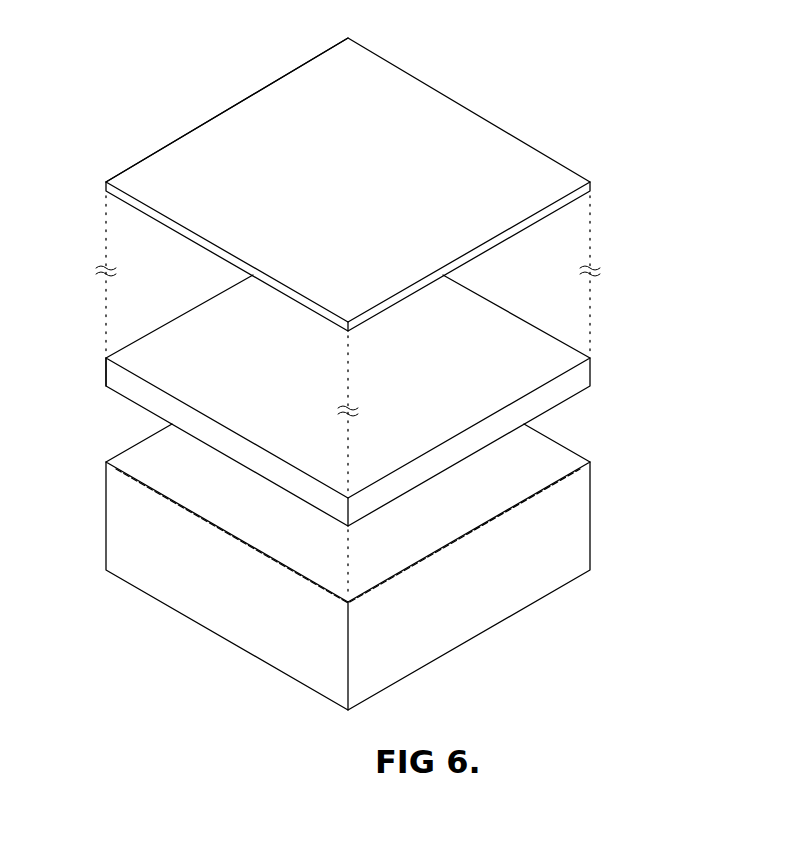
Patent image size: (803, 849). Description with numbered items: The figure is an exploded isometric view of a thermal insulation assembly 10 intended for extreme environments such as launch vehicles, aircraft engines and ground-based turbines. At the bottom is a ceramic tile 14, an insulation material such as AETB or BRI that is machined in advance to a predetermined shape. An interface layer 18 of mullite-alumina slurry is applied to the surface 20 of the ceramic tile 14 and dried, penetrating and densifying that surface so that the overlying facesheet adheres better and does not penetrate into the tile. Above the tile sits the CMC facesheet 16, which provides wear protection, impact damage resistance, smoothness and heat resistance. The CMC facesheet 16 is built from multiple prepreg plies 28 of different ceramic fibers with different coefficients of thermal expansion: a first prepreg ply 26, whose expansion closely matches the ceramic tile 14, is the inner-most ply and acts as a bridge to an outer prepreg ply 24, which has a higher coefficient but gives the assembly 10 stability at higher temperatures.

The thermal insulation assembly 10 is at (541, 70).
The ceramic tile 14 is at (592, 545).
The CMC facesheet 16 is at (619, 173).
The interface layer 18 is at (592, 465).
The surface of ceramic tile 20 is at (570, 478).
The outer prepreg ply 24 is at (104, 182).
The first prepreg ply 26 is at (186, 340).
The prepreg plies 28 is at (187, 152).